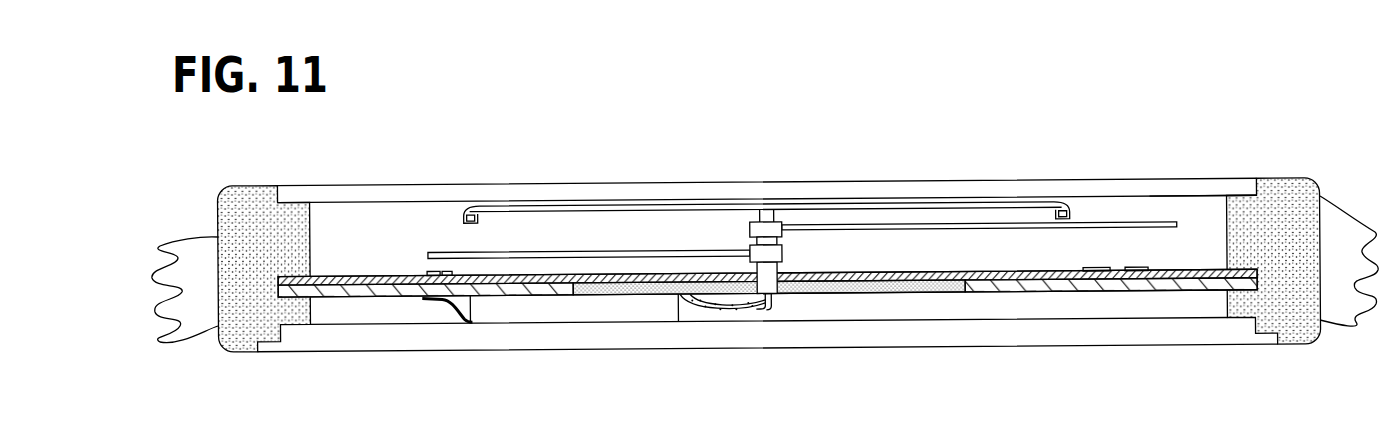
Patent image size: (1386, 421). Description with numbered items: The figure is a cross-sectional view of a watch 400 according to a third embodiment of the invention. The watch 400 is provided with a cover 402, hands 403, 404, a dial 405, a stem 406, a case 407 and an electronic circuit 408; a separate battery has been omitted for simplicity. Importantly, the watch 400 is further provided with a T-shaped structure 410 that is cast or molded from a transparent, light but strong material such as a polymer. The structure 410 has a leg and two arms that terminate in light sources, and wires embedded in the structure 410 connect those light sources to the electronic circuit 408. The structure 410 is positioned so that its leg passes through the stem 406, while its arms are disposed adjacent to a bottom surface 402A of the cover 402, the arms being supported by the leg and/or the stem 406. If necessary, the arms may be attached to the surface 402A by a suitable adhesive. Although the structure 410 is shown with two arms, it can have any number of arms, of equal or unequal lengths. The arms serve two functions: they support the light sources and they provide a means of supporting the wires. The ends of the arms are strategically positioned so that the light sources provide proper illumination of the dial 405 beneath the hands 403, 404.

The watch 400 is at (1292, 134).
The cover 402 is at (1121, 188).
The bottom surface of cover 402A is at (1175, 198).
The hand 403 is at (1099, 222).
The hand 404 is at (438, 251).
The dial 405 is at (907, 272).
The stem 406 is at (782, 240).
The case 407 is at (1303, 180).
The electronic circuit 408 is at (377, 297).
The T-shaped structure 410 is at (863, 195).